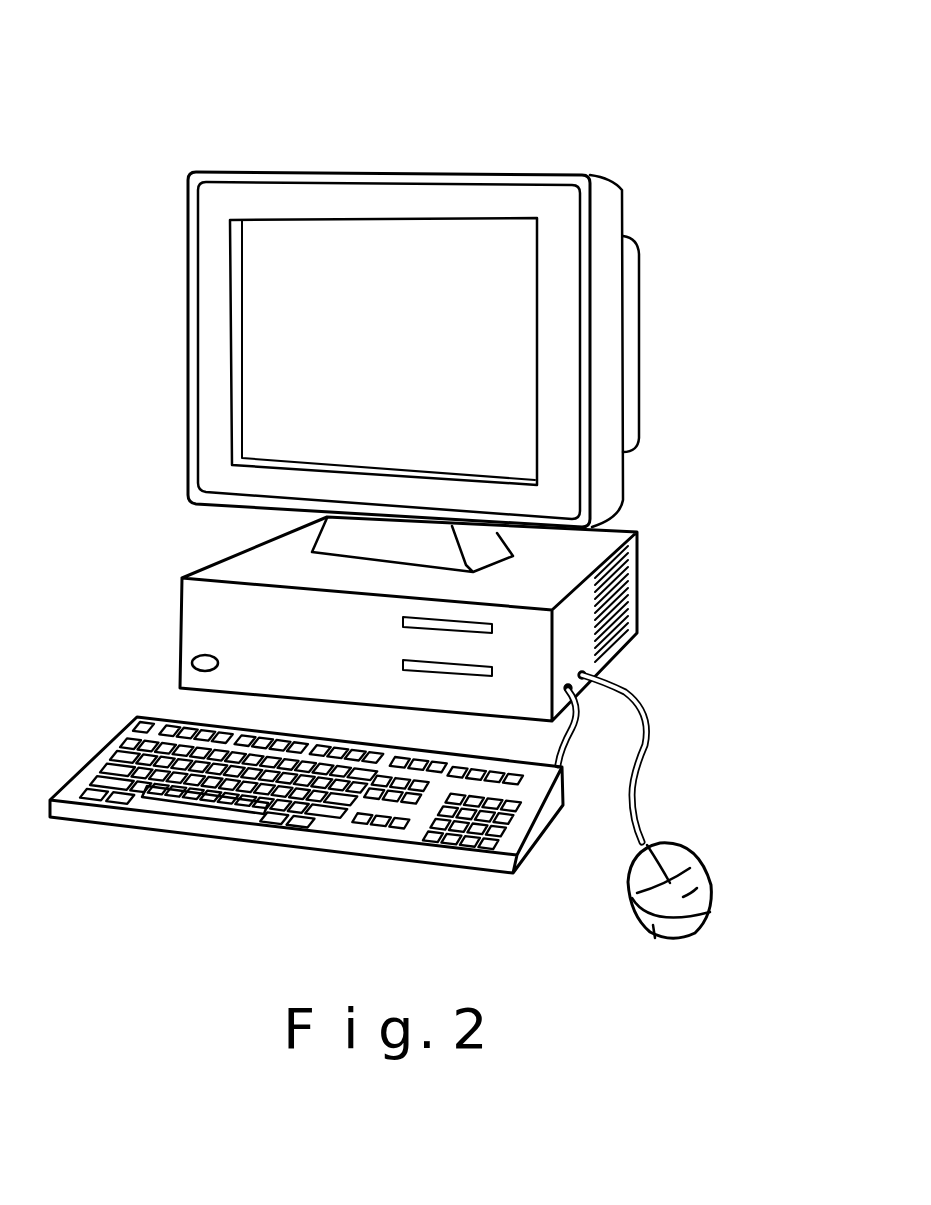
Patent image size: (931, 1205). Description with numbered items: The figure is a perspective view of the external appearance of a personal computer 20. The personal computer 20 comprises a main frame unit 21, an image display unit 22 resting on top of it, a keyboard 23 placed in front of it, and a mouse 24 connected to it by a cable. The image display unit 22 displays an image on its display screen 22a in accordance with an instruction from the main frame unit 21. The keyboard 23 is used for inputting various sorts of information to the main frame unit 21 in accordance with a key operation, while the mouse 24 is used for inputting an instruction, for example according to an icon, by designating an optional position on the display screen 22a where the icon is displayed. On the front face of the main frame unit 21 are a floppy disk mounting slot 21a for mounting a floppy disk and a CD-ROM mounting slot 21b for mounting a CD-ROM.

The personal computer 20 is at (541, 116).
The main frame unit 21 is at (610, 606).
The floppy disk mounting slot 21a is at (403, 618).
The CD-ROM mounting slot 21b is at (403, 661).
The image display unit 22 is at (607, 290).
The display screen 22a is at (485, 358).
The keyboard 23 is at (240, 813).
The mouse 24 is at (692, 893).